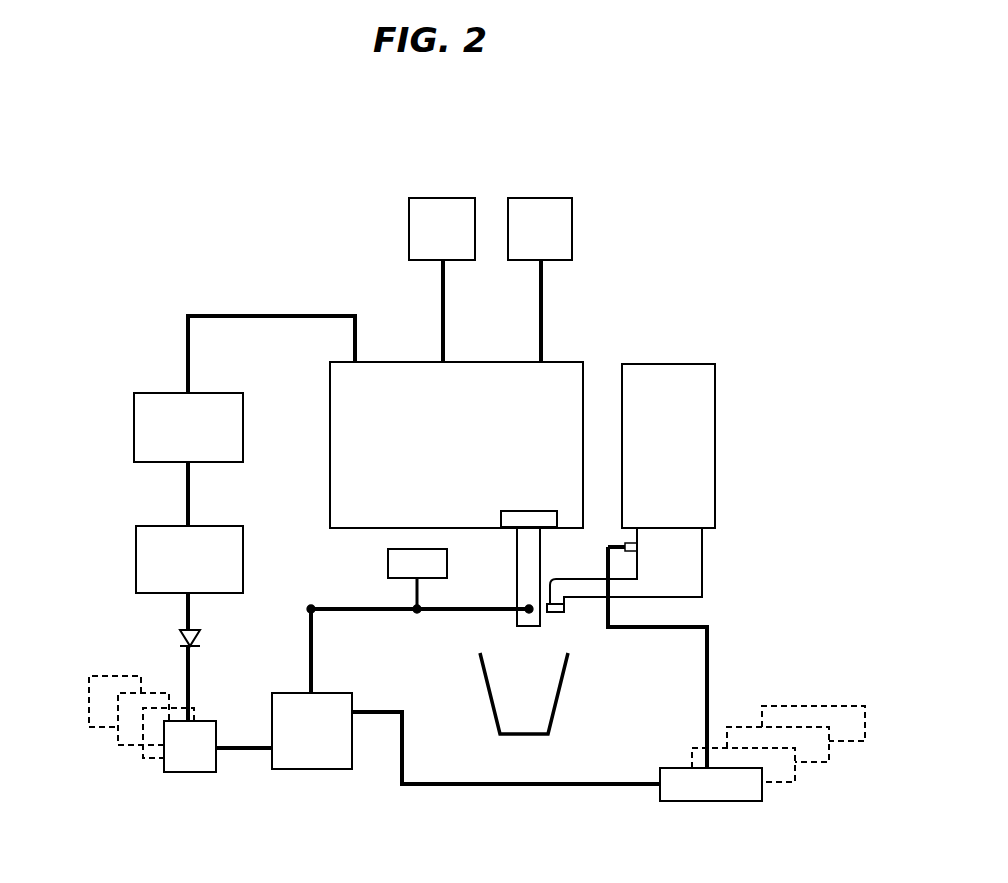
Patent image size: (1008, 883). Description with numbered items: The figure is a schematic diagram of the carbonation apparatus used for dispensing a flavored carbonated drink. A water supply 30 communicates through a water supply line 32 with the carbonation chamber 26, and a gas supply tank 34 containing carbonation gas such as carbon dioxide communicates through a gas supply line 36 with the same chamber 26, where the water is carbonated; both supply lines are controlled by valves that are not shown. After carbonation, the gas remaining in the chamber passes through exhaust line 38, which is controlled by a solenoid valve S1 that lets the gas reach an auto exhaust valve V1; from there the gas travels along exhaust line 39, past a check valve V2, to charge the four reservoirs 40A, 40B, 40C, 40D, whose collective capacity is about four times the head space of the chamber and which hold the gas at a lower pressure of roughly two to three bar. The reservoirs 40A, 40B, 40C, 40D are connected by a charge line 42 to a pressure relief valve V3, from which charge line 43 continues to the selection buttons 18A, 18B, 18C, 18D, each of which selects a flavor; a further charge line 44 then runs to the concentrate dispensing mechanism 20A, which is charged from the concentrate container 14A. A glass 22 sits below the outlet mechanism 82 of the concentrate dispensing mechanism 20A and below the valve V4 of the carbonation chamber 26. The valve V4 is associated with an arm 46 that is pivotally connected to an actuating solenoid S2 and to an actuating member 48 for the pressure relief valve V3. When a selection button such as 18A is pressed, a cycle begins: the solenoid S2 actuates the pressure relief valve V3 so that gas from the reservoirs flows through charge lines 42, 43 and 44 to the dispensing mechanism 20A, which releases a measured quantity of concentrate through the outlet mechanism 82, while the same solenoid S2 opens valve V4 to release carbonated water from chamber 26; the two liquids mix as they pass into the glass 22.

The concentrate container 14A is at (713, 433).
The selection button 18A is at (732, 793).
The selection button 18B is at (792, 763).
The selection button 18C is at (829, 751).
The selection button 18D is at (822, 706).
The concentrate dispensing mechanism 20A is at (692, 562).
The glass 22 is at (558, 697).
The carbonation chamber 26 is at (488, 368).
The water supply 30 is at (445, 208).
The water supply line 32 is at (443, 310).
The gas supply tank 34 is at (535, 208).
The gas supply line 36 is at (541, 315).
The exhaust line 38 is at (258, 316).
The exhaust line 39 is at (190, 680).
The reservoir 40A is at (91, 714).
The reservoir 40B is at (124, 733).
The reservoir 40C is at (154, 755).
The reservoir 40D is at (188, 767).
The charge line 42 is at (236, 750).
The charge line 43 is at (518, 786).
The charge line 44 is at (709, 655).
The arm 46 is at (452, 612).
The actuating member 48 is at (311, 655).
The outlet mechanism 82 is at (555, 612).
The solenoid valve S1 is at (143, 428).
The actuating solenoid S2 is at (388, 563).
The auto exhaust valve V1 is at (145, 555).
The check valve V2 is at (201, 636).
The pressure relief valve V3 is at (303, 770).
The valve V4 is at (523, 547).